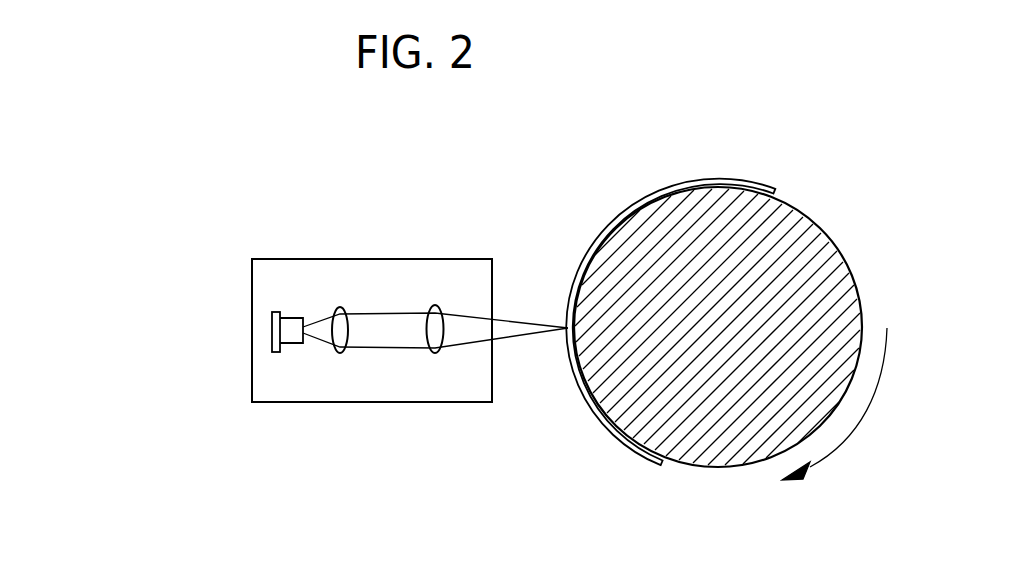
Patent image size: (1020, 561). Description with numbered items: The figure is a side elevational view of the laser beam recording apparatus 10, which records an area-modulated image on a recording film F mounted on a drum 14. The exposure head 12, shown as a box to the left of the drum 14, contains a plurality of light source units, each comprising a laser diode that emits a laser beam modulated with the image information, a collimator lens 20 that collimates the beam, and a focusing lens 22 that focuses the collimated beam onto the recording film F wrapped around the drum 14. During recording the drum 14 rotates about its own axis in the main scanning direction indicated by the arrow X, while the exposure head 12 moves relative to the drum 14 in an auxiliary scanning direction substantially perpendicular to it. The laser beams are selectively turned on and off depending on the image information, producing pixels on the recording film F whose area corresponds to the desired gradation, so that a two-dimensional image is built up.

The laser beam recording apparatus 10 is at (453, 185).
The exposure head 12 is at (372, 258).
The drum 14 is at (813, 283).
The collimator lens 20 is at (340, 353).
The focusing lens 22 is at (435, 353).
The recording film F is at (722, 178).
The main scanning direction X is at (843, 404).